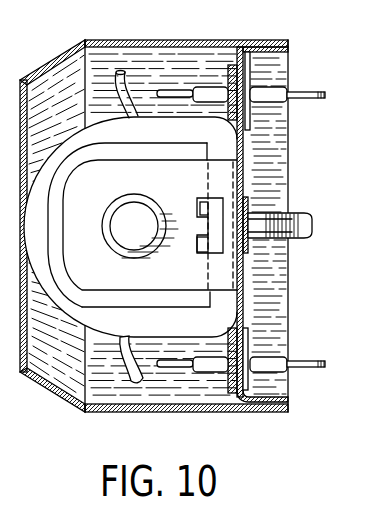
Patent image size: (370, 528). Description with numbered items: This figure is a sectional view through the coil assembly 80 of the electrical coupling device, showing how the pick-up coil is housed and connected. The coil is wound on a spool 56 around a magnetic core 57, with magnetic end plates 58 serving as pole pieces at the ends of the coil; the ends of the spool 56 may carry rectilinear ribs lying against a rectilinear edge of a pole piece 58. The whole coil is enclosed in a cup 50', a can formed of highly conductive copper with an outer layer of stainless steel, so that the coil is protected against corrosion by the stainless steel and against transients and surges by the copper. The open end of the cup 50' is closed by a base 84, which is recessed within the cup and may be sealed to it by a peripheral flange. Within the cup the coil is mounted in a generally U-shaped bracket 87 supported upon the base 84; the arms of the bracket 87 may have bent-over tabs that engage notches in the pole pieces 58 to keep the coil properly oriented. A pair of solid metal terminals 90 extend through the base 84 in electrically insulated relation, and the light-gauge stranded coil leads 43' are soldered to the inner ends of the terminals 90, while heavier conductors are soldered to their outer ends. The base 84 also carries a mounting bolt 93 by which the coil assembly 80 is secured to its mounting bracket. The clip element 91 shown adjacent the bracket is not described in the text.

The coil lead 43' is at (166, 233).
The cup 50' is at (52, 215).
The spool 56 is at (221, 147).
The magnetic core 57 is at (131, 212).
The magnetic end plate 58 is at (210, 303).
The coil assembly 80 is at (177, 15).
The base 84 is at (242, 286).
The U-shaped bracket 87 is at (197, 222).
The terminal 90 is at (274, 94).
The clip 91 is at (210, 245).
The mounting bolt 93 is at (295, 218).